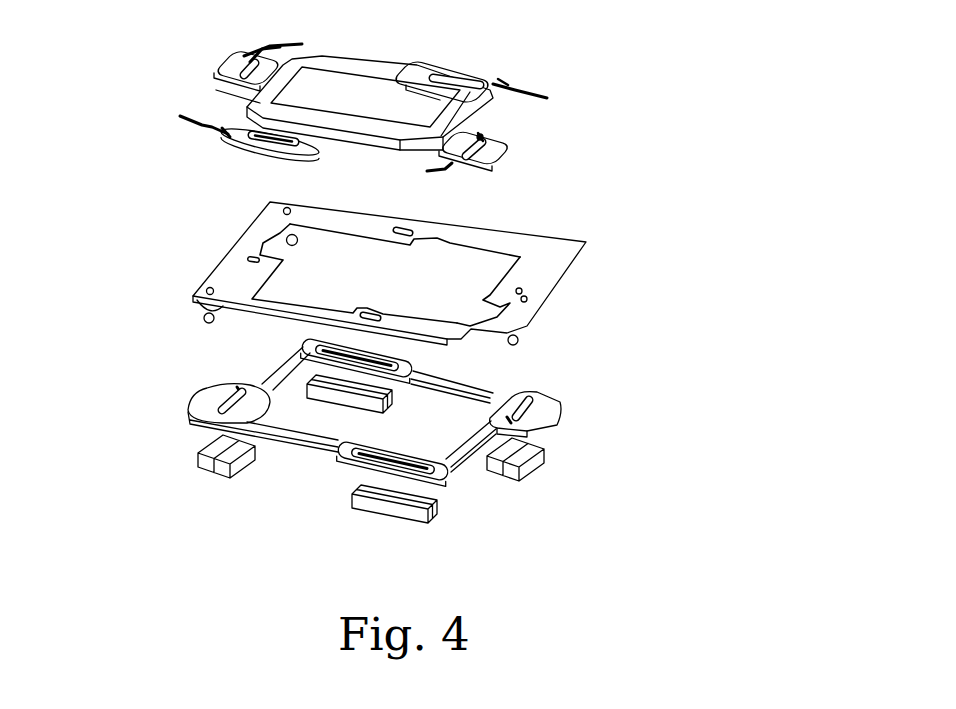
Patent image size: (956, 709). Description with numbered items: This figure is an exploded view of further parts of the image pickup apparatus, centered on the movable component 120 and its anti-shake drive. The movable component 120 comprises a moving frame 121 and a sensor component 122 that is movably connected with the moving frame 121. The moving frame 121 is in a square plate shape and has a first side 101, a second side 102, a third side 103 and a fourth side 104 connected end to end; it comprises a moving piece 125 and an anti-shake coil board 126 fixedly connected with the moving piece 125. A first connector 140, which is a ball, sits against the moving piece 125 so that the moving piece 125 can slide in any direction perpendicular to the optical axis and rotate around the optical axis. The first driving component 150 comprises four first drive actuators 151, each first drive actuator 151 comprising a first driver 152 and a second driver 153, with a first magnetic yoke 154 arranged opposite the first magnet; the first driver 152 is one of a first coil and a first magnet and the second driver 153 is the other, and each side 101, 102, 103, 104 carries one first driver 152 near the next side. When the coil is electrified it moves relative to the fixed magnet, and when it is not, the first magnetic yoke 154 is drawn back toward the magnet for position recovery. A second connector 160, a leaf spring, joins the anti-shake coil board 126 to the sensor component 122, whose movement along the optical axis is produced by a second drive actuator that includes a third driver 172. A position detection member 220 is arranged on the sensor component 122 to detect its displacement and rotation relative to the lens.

The first side 101 is at (323, 317).
The second side 102 is at (550, 292).
The third side 103 is at (370, 217).
The fourth side 104 is at (357, 273).
The movable component 120 is at (539, 219).
The moving frame 121 is at (506, 245).
The sensor component 122 is at (362, 141).
The moving piece 125 is at (548, 247).
The anti-shake coil board 126 is at (490, 383).
The first connector 140 is at (204, 318).
The first driving component 150 is at (404, 445).
The first drive actuator 151 is at (366, 445).
The first driver 152 is at (300, 349).
The second driver 153 is at (310, 376).
The first magnetic yoke 154 is at (513, 415).
The second connector 160 is at (440, 174).
The third driver 172 is at (495, 146).
The position detection member 220 is at (483, 137).